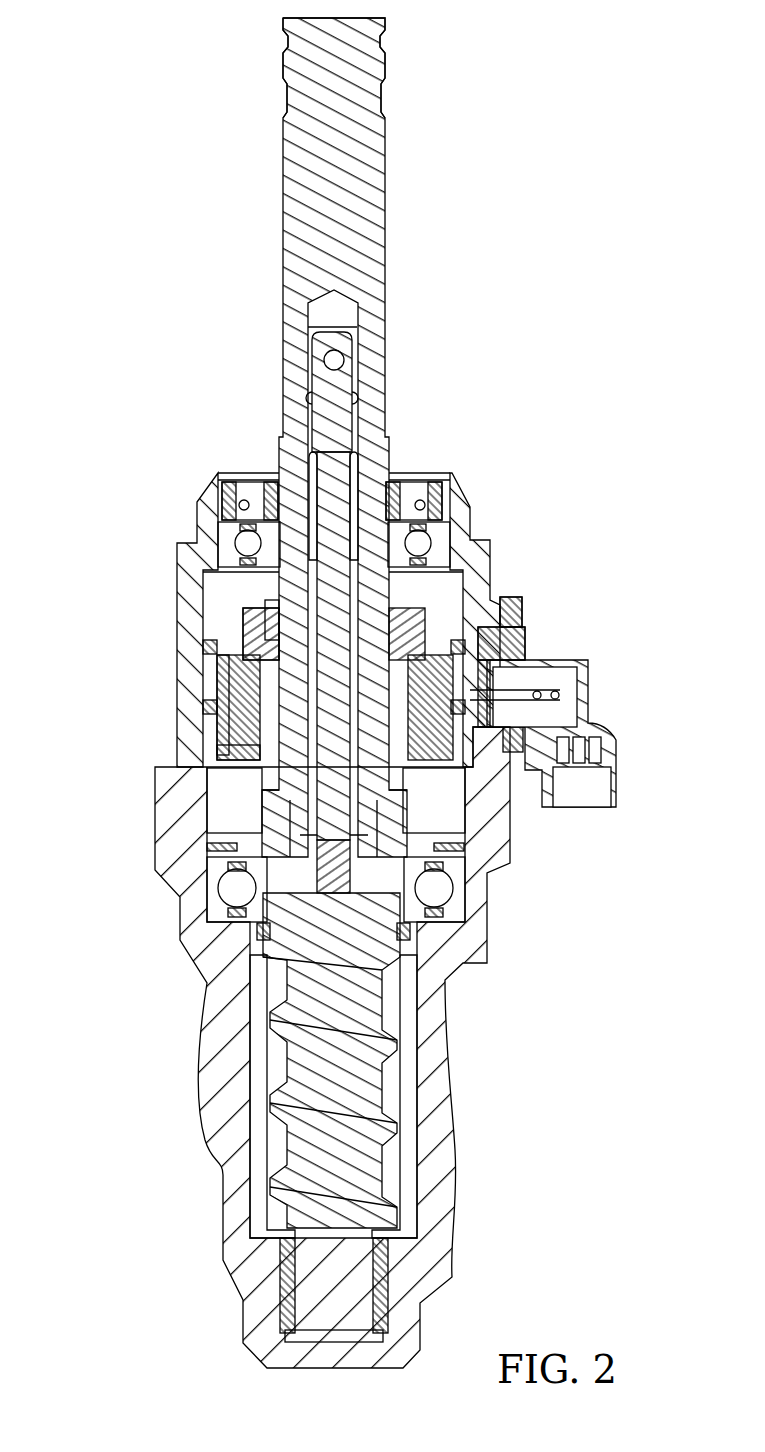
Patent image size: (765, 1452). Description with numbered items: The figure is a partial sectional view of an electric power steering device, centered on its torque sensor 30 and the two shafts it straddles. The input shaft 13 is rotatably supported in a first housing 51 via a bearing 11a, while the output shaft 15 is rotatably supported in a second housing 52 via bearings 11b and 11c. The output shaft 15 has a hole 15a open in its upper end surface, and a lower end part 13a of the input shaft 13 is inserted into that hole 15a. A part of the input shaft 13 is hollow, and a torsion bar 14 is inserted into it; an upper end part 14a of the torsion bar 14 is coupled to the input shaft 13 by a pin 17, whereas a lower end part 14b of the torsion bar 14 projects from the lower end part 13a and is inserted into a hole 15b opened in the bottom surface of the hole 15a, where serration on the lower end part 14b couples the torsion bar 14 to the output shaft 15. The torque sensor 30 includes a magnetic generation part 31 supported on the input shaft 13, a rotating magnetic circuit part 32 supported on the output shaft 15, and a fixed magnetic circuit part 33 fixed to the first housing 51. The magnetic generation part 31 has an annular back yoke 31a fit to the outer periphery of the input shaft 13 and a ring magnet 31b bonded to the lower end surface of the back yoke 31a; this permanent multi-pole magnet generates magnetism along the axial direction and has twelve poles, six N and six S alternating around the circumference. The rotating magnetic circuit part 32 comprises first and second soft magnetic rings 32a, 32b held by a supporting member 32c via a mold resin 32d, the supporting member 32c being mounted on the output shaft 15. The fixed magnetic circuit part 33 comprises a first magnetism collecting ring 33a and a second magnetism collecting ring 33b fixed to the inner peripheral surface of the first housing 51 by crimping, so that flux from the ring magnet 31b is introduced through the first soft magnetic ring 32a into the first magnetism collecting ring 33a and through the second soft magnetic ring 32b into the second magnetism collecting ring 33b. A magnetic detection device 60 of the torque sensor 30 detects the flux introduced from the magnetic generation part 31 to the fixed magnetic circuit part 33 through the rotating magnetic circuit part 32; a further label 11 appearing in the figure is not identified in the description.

The electric actuator shaft assembly 11 is at (278, 90).
The input shaft 13 is at (300, 213).
The pin 17 is at (327, 362).
The upper end part of the torsion bar 14a is at (317, 398).
The torsion bar 14 is at (303, 427).
The first housing 51 is at (185, 563).
The bearing 11a is at (235, 540).
The magnetic generation part 31 is at (90, 562).
The back yoke 31a is at (245, 630).
The ring magnet 31b is at (265, 650).
The rotating magnetic circuit part 32 is at (90, 635).
The first soft magnetic ring 32a is at (210, 652).
The mold resin 32d is at (225, 690).
The second soft magnetic ring 32b is at (210, 712).
The supporting member 32c is at (260, 750).
The lower end part of the input shaft 13a is at (270, 792).
The hole 15a is at (290, 812).
The lower end part of the torsion bar 14b is at (322, 866).
The hole 15b is at (327, 888).
The bearing 11b is at (215, 905).
The second housing 52 is at (225, 993).
The output shaft 15 is at (312, 1058).
The bearing 11c is at (288, 1290).
The torque sensor 30 is at (523, 597).
The first magnetism collecting ring 33a is at (462, 698).
The second magnetism collecting ring 33b is at (495, 720).
The fixed magnetic circuit part 33 is at (604, 586).
The magnetic detection device 60 is at (592, 702).